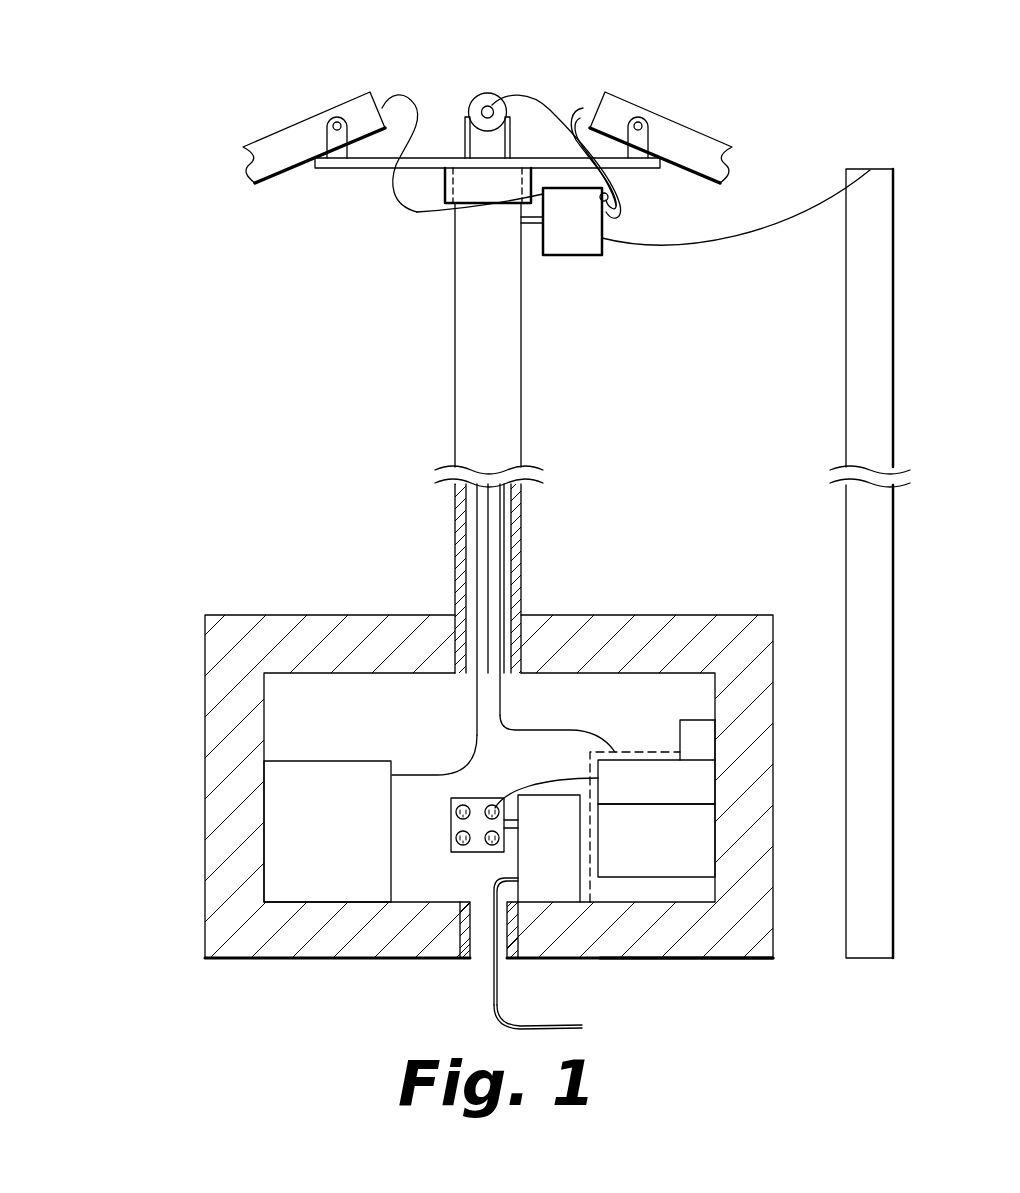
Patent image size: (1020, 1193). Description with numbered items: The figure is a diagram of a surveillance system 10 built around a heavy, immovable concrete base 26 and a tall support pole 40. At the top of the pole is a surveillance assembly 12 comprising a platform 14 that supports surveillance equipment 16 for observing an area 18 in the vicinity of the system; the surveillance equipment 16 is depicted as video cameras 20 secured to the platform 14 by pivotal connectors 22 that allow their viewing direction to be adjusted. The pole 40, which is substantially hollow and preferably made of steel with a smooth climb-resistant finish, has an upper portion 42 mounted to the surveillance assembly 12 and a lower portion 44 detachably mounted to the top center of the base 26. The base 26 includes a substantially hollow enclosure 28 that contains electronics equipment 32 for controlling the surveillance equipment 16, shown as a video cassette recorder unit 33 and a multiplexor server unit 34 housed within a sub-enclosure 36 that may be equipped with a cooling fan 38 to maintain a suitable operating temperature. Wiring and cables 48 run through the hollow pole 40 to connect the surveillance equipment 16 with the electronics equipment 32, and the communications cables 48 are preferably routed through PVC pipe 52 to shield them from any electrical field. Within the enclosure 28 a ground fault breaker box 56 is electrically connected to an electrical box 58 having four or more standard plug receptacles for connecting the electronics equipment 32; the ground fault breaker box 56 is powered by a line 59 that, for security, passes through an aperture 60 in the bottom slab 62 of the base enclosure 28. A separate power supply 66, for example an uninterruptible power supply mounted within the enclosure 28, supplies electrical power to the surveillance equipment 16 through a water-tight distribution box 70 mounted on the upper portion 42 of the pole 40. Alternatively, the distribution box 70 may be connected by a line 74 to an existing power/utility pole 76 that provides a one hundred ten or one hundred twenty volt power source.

The surveillance system 10 is at (171, 206).
The surveillance assembly 12 is at (597, 69).
The platform 14 is at (650, 183).
The surveillance equipment 16 is at (302, 98).
The area 18 is at (143, 872).
The video cameras 20 is at (266, 137).
The pivotal connectors 22 is at (336, 156).
The base 26 is at (233, 579).
The enclosure 28 is at (191, 700).
The electronics equipment 32 is at (669, 736).
The video cassette recorder unit 33 is at (708, 780).
The multiplexor server unit 34 is at (708, 835).
The sub-enclosure 36 is at (625, 752).
The cooling fan 38 is at (708, 740).
The support pole 40 is at (443, 372).
The upper portion 42 is at (445, 200).
The lower portion 44 is at (460, 600).
The cables 48 is at (552, 727).
The PVC pipe 52 is at (500, 528).
The ground fault breaker box 56 is at (555, 890).
The electrical box 58 is at (492, 805).
The line 59 is at (490, 985).
The aperture 60 is at (478, 905).
The slab 62 is at (683, 958).
The power supply 66 is at (332, 761).
The distribution box 70 is at (580, 257).
The line 74 is at (670, 250).
The utility pole 76 is at (846, 337).